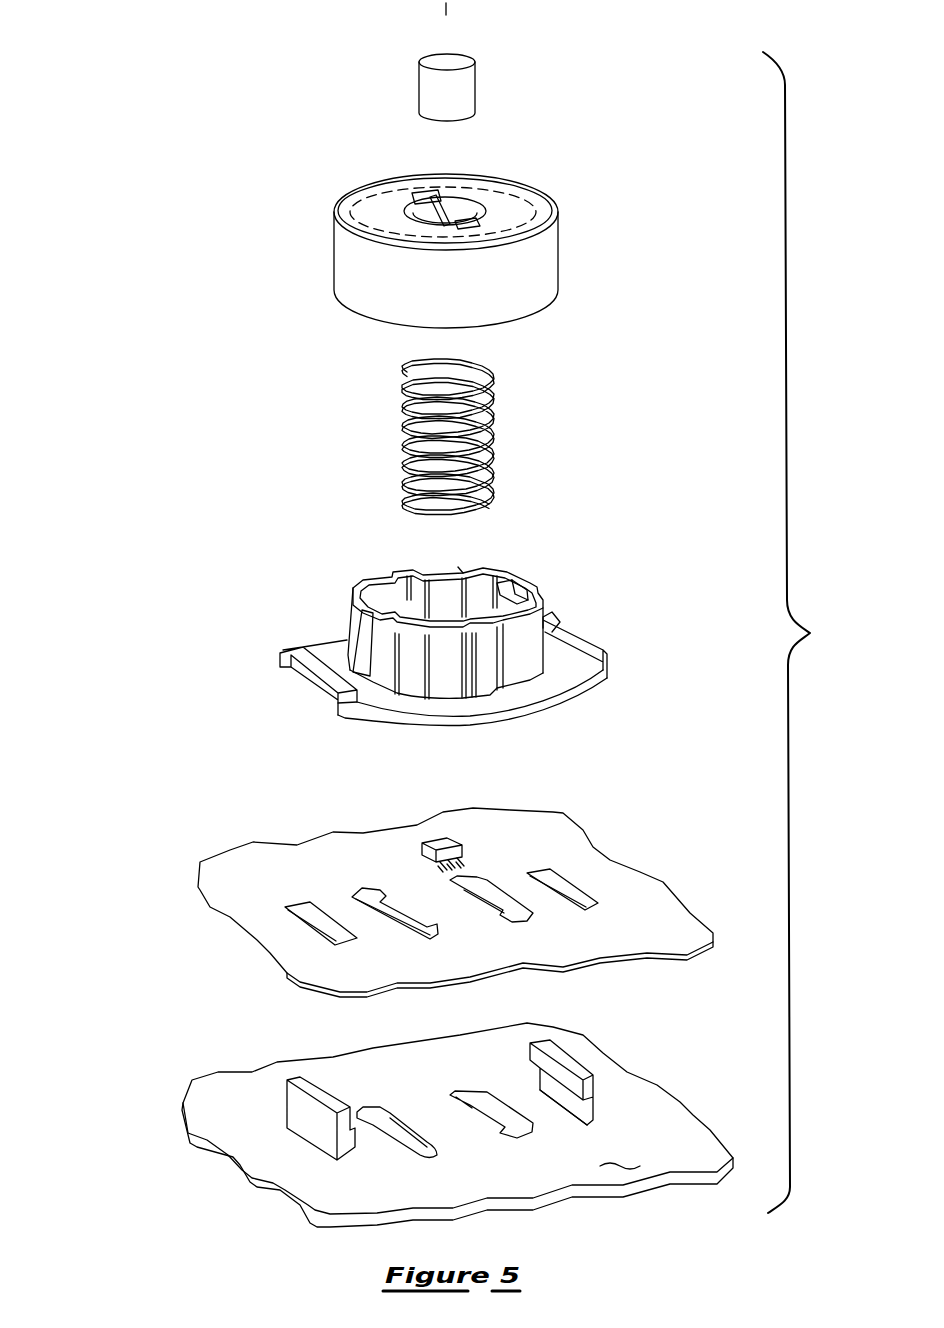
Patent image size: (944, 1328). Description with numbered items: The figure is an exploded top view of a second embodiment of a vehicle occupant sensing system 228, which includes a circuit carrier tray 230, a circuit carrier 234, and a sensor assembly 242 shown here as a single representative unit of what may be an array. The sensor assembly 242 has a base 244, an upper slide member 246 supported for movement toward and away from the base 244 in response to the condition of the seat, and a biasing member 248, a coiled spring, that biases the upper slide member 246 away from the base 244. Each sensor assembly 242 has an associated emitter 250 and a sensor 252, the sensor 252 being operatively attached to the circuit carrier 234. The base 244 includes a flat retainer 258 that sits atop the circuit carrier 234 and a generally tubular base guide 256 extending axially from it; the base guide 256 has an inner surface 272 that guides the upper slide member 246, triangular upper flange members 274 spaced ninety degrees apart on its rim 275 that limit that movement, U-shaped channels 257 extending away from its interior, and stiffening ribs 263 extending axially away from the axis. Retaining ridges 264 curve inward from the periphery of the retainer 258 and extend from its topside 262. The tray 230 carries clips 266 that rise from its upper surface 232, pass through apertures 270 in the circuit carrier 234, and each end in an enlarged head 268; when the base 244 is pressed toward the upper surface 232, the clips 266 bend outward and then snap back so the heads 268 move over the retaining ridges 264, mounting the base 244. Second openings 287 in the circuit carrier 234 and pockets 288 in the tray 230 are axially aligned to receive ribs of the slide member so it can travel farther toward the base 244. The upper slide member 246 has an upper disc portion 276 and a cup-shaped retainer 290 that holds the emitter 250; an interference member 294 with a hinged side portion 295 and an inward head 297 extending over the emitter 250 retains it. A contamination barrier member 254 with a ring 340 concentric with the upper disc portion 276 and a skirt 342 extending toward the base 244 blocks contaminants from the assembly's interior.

The vehicle occupant sensing system 228 is at (810, 632).
The circuit carrier tray 230 is at (455, 1138).
The upper surface 232 is at (622, 1152).
The circuit carrier 234 is at (421, 882).
The sensor assembly 242 is at (396, 437).
The base 244 is at (417, 643).
The upper slide member 246 is at (444, 213).
The biasing member 248 is at (495, 437).
The emitter 250 is at (477, 88).
The sensor 252 is at (440, 840).
The contamination barrier member 254 is at (455, 213).
The base guide 256 is at (450, 598).
The U-shaped channel 257 is at (410, 580).
The retainer 258 is at (447, 700).
The topside 262 is at (375, 698).
The stiffening rib 263 is at (368, 633).
The retaining ridge 264 is at (312, 673).
The clip 266 is at (600, 1110).
The enlarged head 268 is at (563, 1072).
The aperture 270 is at (556, 897).
The inner surface 272 is at (527, 588).
The upper flange member 274 is at (497, 586).
The rim 275 is at (460, 567).
The upper disc portion 276 is at (510, 197).
The second opening 287 is at (482, 897).
The pocket 288 is at (397, 1150).
The retainer 290 is at (493, 203).
The interference member 294 is at (426, 196).
The side portion 295 is at (413, 213).
The head 297 is at (435, 200).
The ring 340 is at (352, 207).
The skirt 342 is at (347, 273).